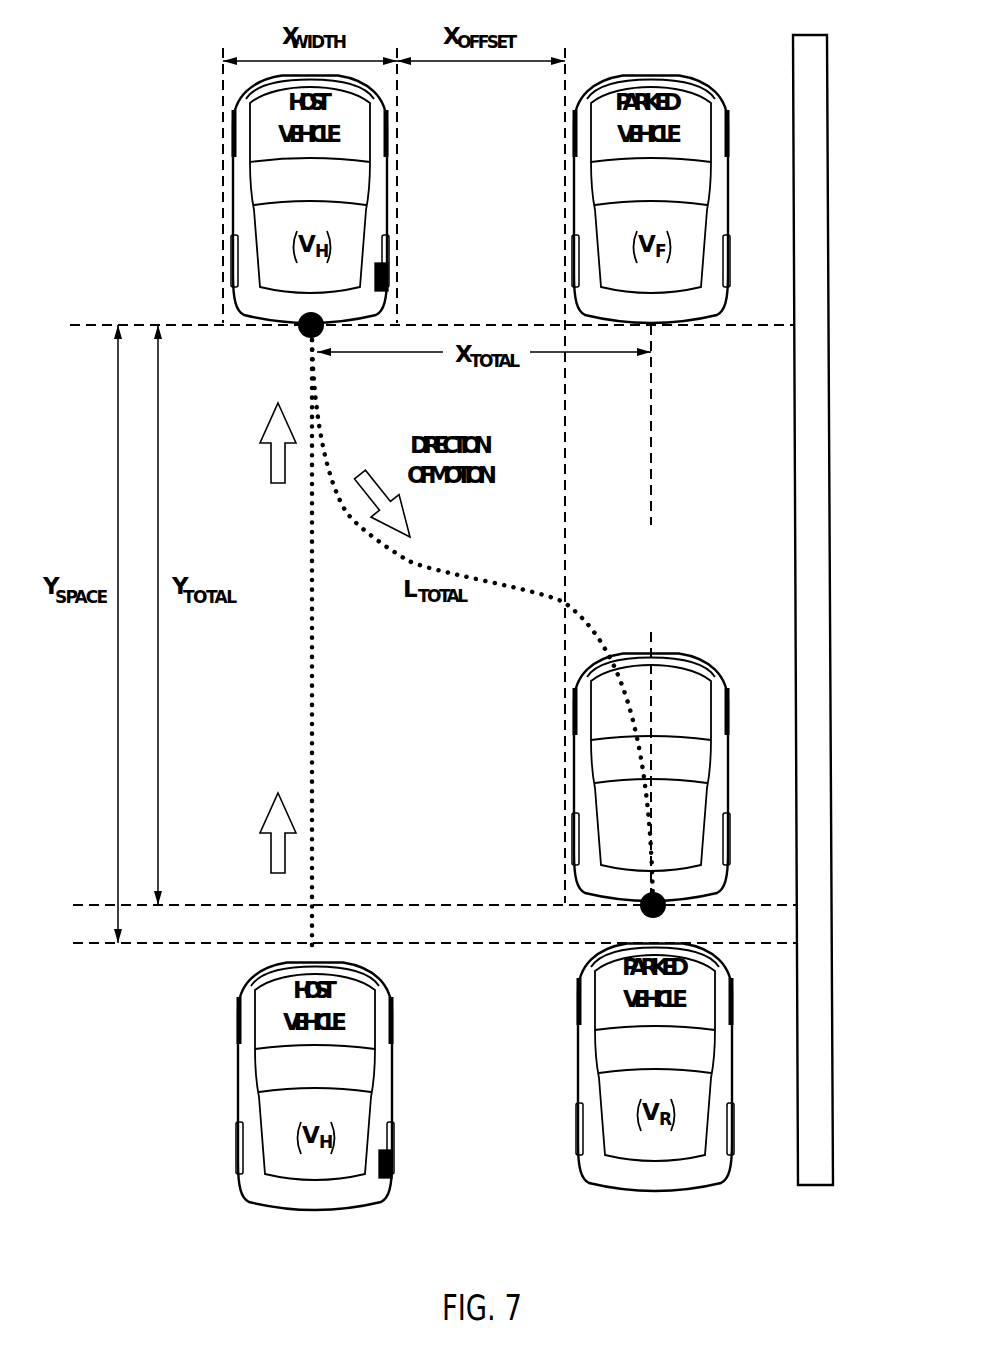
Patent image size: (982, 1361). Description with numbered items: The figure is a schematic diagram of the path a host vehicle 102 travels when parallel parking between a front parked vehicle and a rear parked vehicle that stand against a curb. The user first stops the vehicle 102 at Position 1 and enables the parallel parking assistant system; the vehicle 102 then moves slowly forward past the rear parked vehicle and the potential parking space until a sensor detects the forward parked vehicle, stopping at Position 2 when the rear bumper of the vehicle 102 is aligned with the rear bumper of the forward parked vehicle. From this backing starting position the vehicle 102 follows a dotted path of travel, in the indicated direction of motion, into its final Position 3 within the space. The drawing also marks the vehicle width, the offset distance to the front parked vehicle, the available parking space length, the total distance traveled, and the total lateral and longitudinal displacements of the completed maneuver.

The vehicle 102 is at (416, 643).
The Position 1 is at (217, 1046).
The Position 2 is at (212, 159).
The Position 3 is at (707, 561).